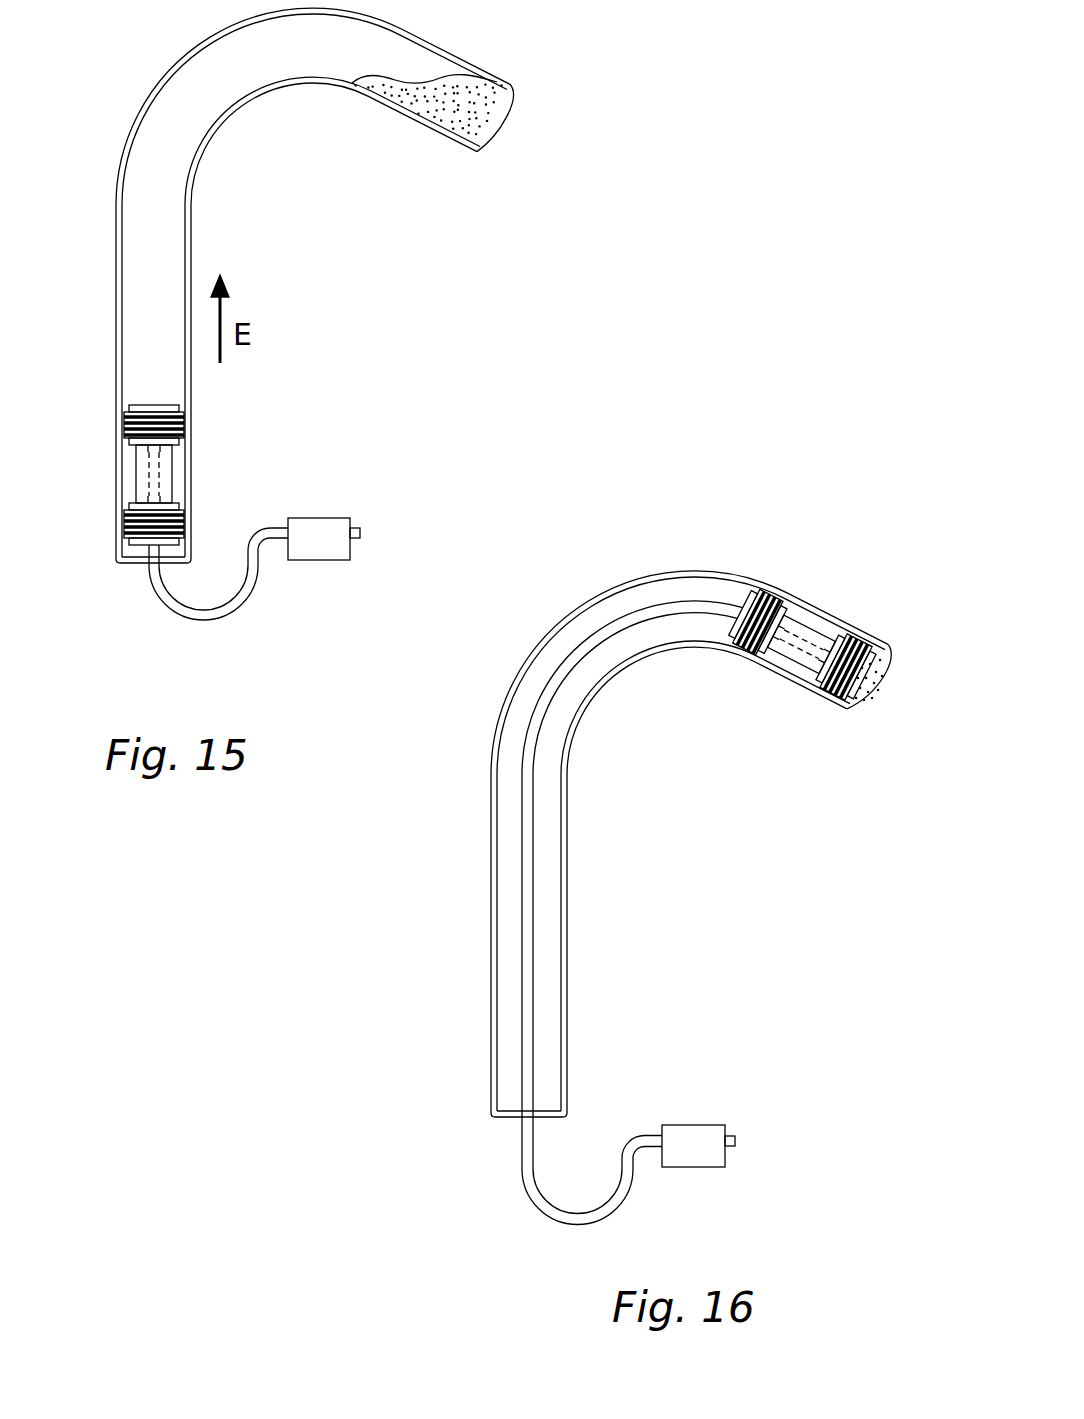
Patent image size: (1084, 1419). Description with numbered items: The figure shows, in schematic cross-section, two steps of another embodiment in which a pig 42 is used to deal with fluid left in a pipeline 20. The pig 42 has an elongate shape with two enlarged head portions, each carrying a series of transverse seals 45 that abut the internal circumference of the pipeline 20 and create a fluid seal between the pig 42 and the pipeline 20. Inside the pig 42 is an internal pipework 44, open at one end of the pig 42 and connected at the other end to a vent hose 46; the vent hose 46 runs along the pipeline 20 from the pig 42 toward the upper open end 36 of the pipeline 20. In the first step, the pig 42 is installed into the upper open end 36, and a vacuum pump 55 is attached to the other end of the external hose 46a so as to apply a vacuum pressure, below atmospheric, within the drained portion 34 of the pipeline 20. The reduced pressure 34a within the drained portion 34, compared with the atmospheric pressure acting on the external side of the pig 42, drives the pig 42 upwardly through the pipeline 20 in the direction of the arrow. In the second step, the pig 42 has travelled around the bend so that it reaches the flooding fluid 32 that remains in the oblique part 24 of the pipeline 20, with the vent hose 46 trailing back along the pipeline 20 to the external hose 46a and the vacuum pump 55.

In FIG. 15, the pipeline 20 is at (285, 318).
In FIG. 16, the pipeline 20 is at (684, 817).
In FIG. 15, the oblique part 24 is at (447, 47).
In FIG. 15, the flooding fluid 32 is at (466, 122).
In FIG. 16, the flooding fluid 32 is at (852, 716).
In FIG. 15, the drained portion 34 is at (186, 216).
In FIG. 15, the reduced pressure 34a is at (145, 278).
In FIG. 15, the upper open end 36 is at (117, 563).
In FIG. 15, the pig 42 is at (158, 469).
In FIG. 16, the pig 42 is at (800, 632).
In FIG. 15, the internal pipework 44 is at (182, 435).
In FIG. 15, the transverse seals 45 is at (154, 475).
In FIG. 16, the vent hose 46 is at (528, 1182).
In FIG. 15, the external hose 46a is at (160, 601).
In FIG. 15, the vacuum pump 55 is at (320, 535).
In FIG. 16, the vacuum pump 55 is at (690, 1137).